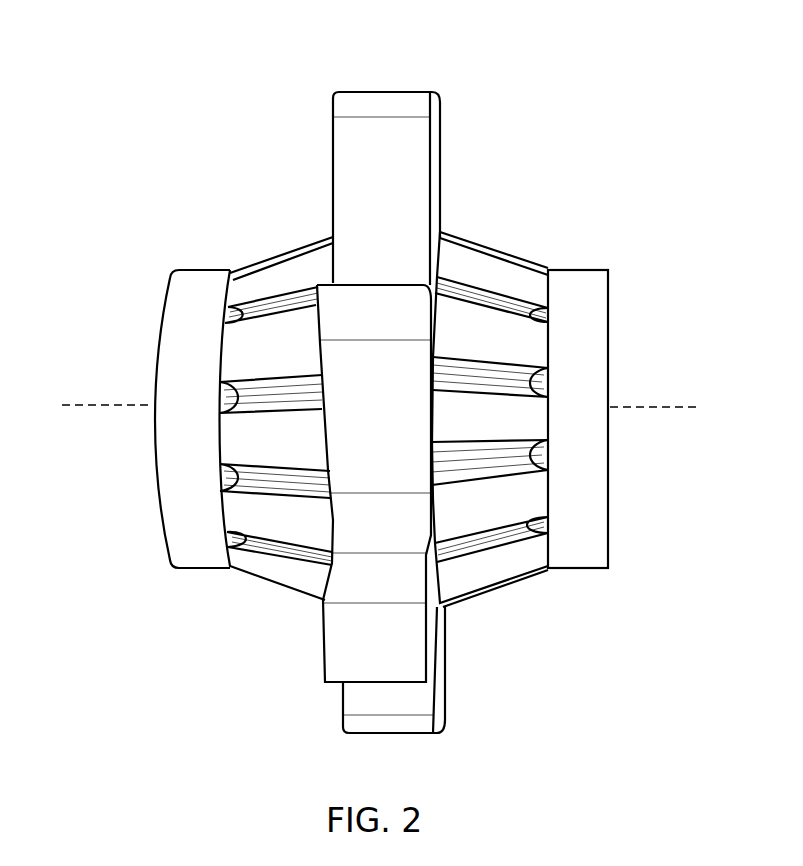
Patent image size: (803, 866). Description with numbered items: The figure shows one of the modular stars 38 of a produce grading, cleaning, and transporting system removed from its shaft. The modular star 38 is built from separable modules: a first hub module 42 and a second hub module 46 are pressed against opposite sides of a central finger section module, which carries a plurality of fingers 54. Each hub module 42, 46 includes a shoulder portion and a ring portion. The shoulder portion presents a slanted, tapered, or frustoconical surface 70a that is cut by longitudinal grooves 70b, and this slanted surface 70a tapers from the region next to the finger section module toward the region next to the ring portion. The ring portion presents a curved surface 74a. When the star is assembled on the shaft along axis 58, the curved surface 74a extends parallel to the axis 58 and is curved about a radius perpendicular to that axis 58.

The modular star 38 is at (128, 140).
The first hub module 42 is at (167, 297).
The second hub module 46 is at (612, 287).
The fingers 54 is at (390, 90).
The axis 58 is at (105, 408).
The slanted surface 70a is at (278, 340).
The longitudinal grooves 70b is at (258, 300).
The curved surface 74a is at (197, 280).